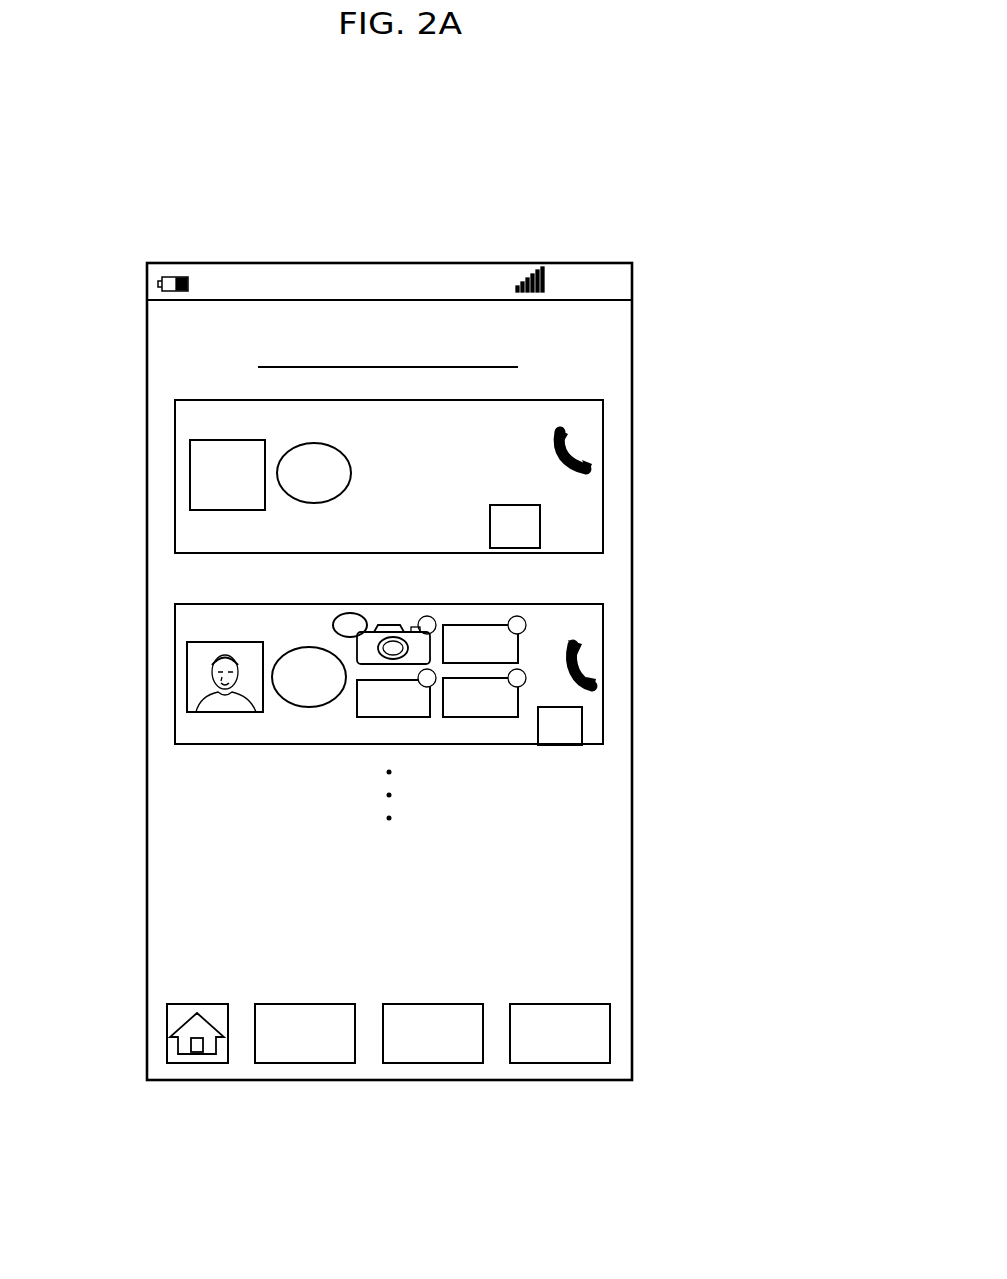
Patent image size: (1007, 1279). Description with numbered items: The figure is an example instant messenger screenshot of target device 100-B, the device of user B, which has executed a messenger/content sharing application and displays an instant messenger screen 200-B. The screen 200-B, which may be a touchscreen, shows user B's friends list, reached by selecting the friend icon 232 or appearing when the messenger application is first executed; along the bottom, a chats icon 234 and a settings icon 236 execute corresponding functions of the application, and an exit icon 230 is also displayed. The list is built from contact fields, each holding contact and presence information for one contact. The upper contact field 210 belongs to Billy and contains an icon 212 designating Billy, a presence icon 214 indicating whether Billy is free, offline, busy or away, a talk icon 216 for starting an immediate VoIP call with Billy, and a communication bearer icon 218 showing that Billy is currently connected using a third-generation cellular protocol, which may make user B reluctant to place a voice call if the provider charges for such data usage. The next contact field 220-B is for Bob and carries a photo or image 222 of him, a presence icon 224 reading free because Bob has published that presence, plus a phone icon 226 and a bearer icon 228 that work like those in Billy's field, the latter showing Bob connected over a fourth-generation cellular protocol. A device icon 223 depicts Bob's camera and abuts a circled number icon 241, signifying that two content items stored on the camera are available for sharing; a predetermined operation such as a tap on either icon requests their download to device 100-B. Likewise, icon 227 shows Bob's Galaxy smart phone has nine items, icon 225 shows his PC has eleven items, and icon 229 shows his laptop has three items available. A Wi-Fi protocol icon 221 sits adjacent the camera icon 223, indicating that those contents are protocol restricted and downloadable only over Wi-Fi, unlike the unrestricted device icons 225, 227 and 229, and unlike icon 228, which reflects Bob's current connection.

The target device 100-B is at (122, 292).
The instant messenger screen 200-B is at (160, 345).
The contact field 210 is at (190, 538).
The icon designating Billy 212 is at (190, 481).
The presence icon 214 is at (296, 446).
The talk icon 216 is at (592, 458).
The communication bearer icon 218 is at (540, 525).
The contact field 220-B is at (185, 720).
The protocol icon 221 is at (348, 612).
The friend image/name area (Bob) 222 is at (187, 660).
The device icon 223 is at (378, 626).
The presence icon 224 is at (308, 646).
The PC icon 225 is at (380, 717).
The phone icon 226 is at (593, 672).
The Galaxy smart phone icon 227 is at (477, 625).
The communication bearer icon 228 is at (583, 725).
The laptop icon 229 is at (480, 718).
The circled number icon 241 is at (433, 616).
The exit icon 230 is at (197, 1065).
The friend icon 232 is at (305, 1065).
The chats icon 234 is at (433, 1065).
The settings icon 236 is at (560, 1065).